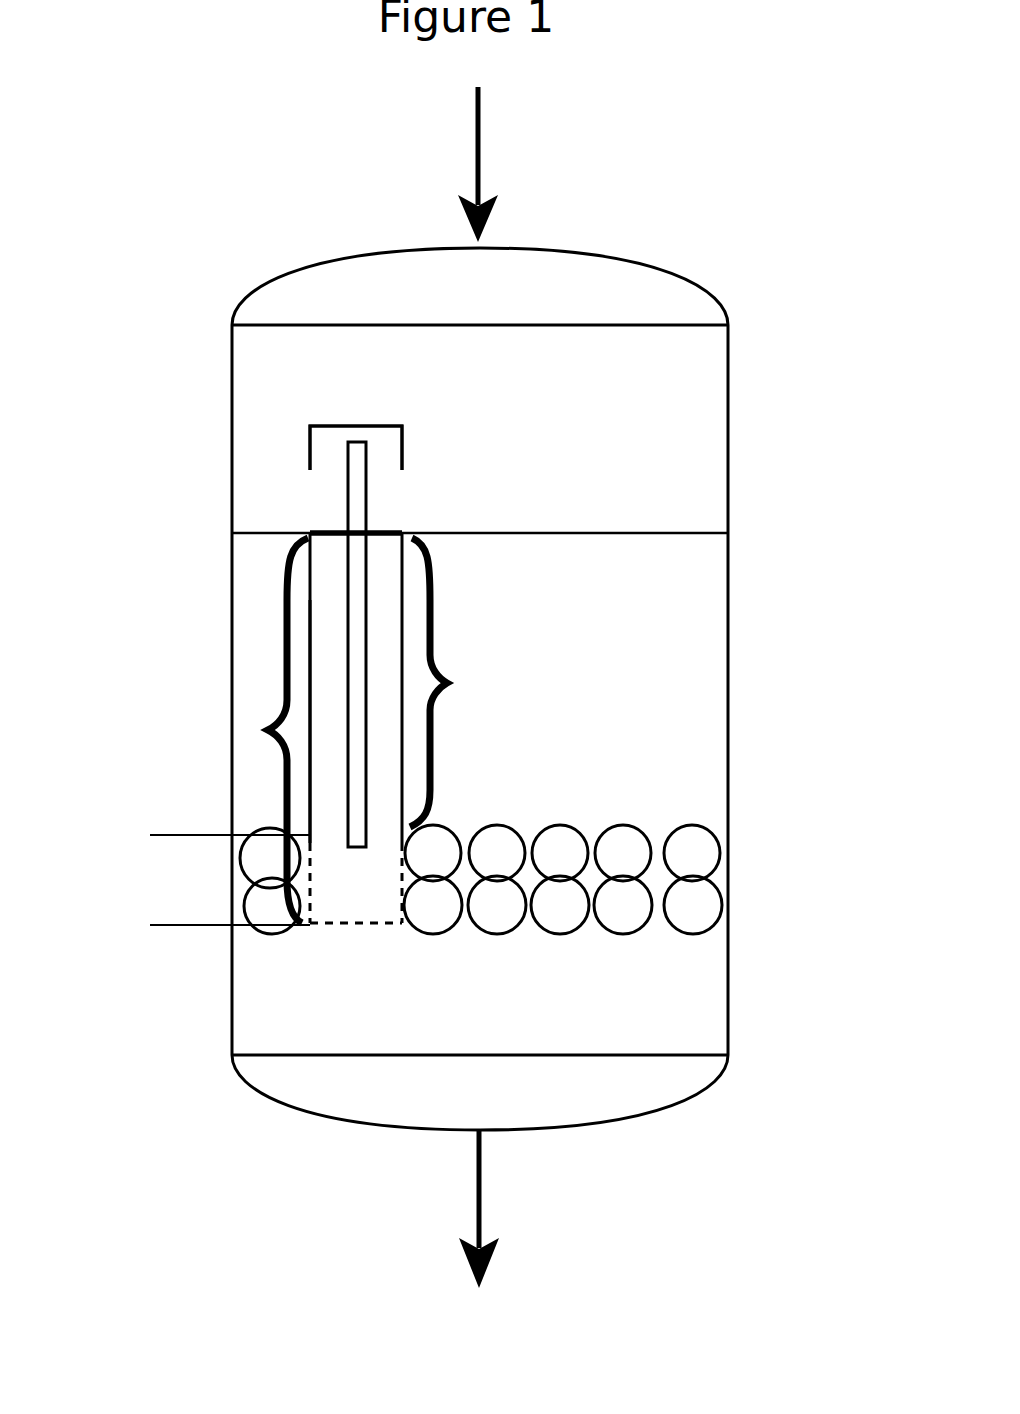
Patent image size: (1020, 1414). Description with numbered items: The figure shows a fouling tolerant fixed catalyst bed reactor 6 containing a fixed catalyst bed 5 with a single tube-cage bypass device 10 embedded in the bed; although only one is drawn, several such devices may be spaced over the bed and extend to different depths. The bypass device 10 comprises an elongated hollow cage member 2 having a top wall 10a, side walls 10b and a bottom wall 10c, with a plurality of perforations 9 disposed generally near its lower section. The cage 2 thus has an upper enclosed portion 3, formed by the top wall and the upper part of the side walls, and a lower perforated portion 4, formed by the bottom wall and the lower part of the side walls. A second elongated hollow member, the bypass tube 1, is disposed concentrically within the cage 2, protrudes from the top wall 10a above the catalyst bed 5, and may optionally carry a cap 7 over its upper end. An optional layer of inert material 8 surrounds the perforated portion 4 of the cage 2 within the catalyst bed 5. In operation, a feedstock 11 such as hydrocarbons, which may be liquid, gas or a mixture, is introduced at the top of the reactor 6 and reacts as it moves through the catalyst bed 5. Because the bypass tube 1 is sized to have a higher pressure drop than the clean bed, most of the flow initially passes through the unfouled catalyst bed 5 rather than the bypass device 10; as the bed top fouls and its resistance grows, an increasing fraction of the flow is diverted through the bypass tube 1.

The bypass tube 1 is at (345, 507).
The cage member 2 is at (268, 730).
The upper enclosed portion 3 is at (447, 683).
The lower perforated portion 4 is at (150, 833).
The catalyst bed 5 is at (528, 608).
The reactor 6 is at (728, 690).
The cap 7 is at (402, 447).
The layer of inert material 8 is at (718, 847).
The perforations 9 is at (318, 932).
The bypass device 10 is at (277, 508).
The top wall 10a is at (382, 527).
The side walls 10b is at (310, 728).
The bottom wall 10c is at (400, 928).
The feedstock 11 is at (518, 164).